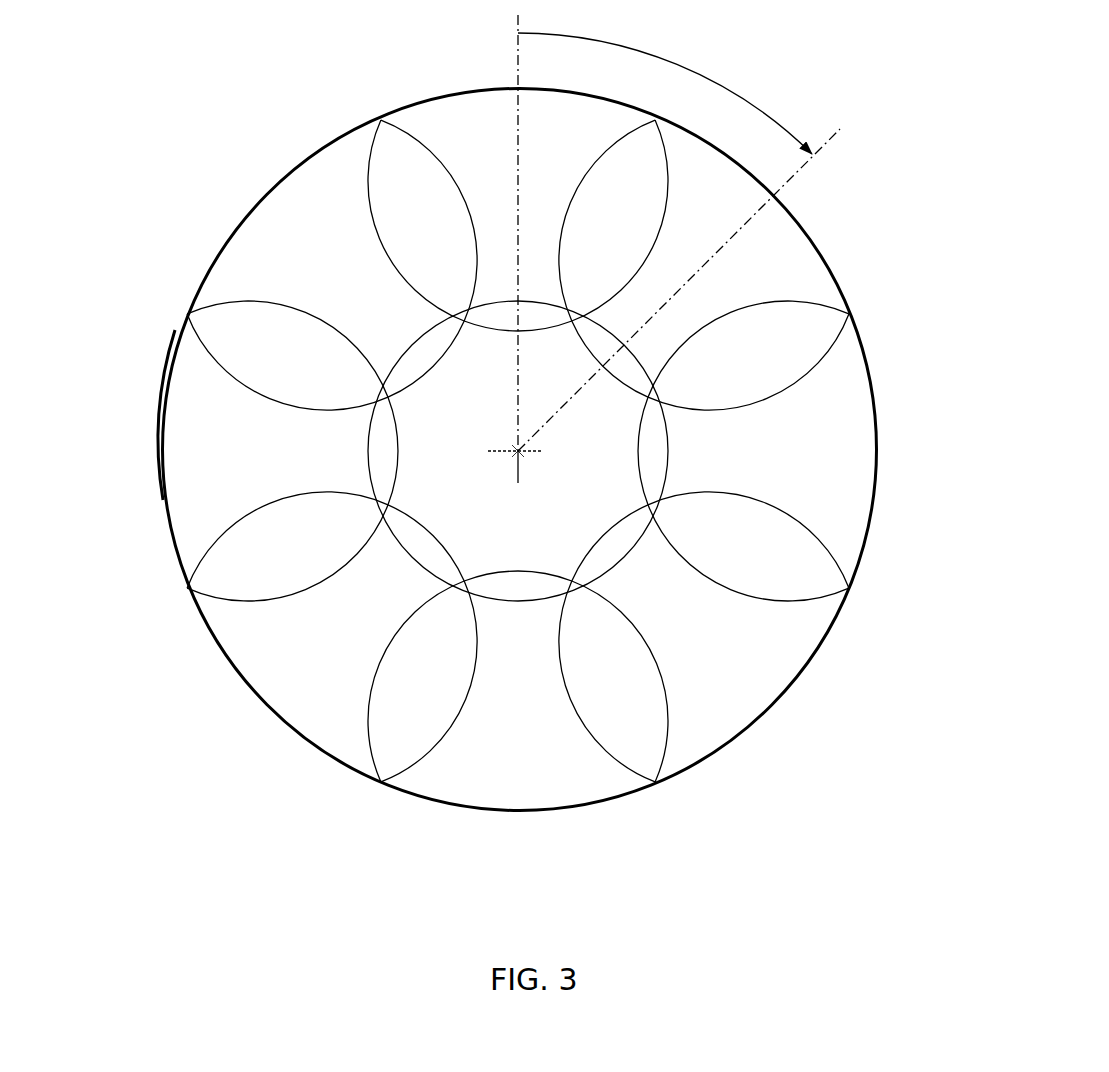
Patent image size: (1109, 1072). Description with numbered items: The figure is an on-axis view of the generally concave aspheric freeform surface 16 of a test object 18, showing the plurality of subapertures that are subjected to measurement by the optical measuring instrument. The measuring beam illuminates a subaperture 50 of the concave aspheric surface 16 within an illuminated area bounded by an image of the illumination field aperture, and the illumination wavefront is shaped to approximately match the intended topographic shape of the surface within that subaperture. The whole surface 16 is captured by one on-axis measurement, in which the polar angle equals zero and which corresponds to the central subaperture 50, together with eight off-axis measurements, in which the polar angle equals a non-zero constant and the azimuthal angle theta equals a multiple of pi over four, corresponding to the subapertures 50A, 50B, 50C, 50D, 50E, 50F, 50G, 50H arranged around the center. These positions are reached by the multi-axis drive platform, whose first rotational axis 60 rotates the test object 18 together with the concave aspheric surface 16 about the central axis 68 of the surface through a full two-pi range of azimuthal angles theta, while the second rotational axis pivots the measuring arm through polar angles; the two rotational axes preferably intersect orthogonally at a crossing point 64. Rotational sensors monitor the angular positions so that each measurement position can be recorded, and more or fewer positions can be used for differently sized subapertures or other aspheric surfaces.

The concave aspheric surface 16 is at (729, 622).
The test object 18 is at (200, 280).
The subaperture 50 is at (432, 373).
The subaperture 50A is at (367, 205).
The subaperture 50B is at (571, 182).
The subaperture 50C is at (775, 305).
The subaperture 50D is at (800, 521).
The subaperture 50E is at (675, 698).
The subaperture 50F is at (424, 734).
The subaperture 50G is at (257, 602).
The subaperture 50H is at (247, 388).
The first rotational axis 60 is at (520, 453).
The crossing point 64 is at (517, 450).
The central axis 68 is at (549, 482).
The azimuthal angle theta is at (703, 80).